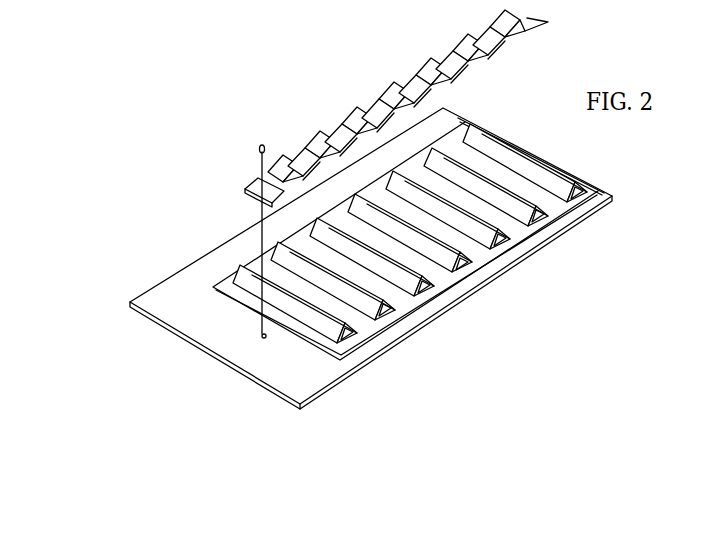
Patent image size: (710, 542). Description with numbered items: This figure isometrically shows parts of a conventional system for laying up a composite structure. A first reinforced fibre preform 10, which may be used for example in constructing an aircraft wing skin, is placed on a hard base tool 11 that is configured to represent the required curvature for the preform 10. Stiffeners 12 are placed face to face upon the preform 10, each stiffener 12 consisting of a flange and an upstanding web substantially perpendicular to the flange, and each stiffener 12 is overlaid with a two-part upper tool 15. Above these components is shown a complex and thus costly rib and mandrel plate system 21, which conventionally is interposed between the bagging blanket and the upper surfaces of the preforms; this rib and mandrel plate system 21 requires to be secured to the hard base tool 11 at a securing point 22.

The first reinforced fibre preform 10 is at (376, 328).
The hard base tool 11 is at (222, 334).
The stiffener 12 is at (582, 187).
The two-part upper tool 15 is at (543, 172).
The rib and mandrel plate system 21 is at (310, 145).
The securing point 22 is at (250, 178).